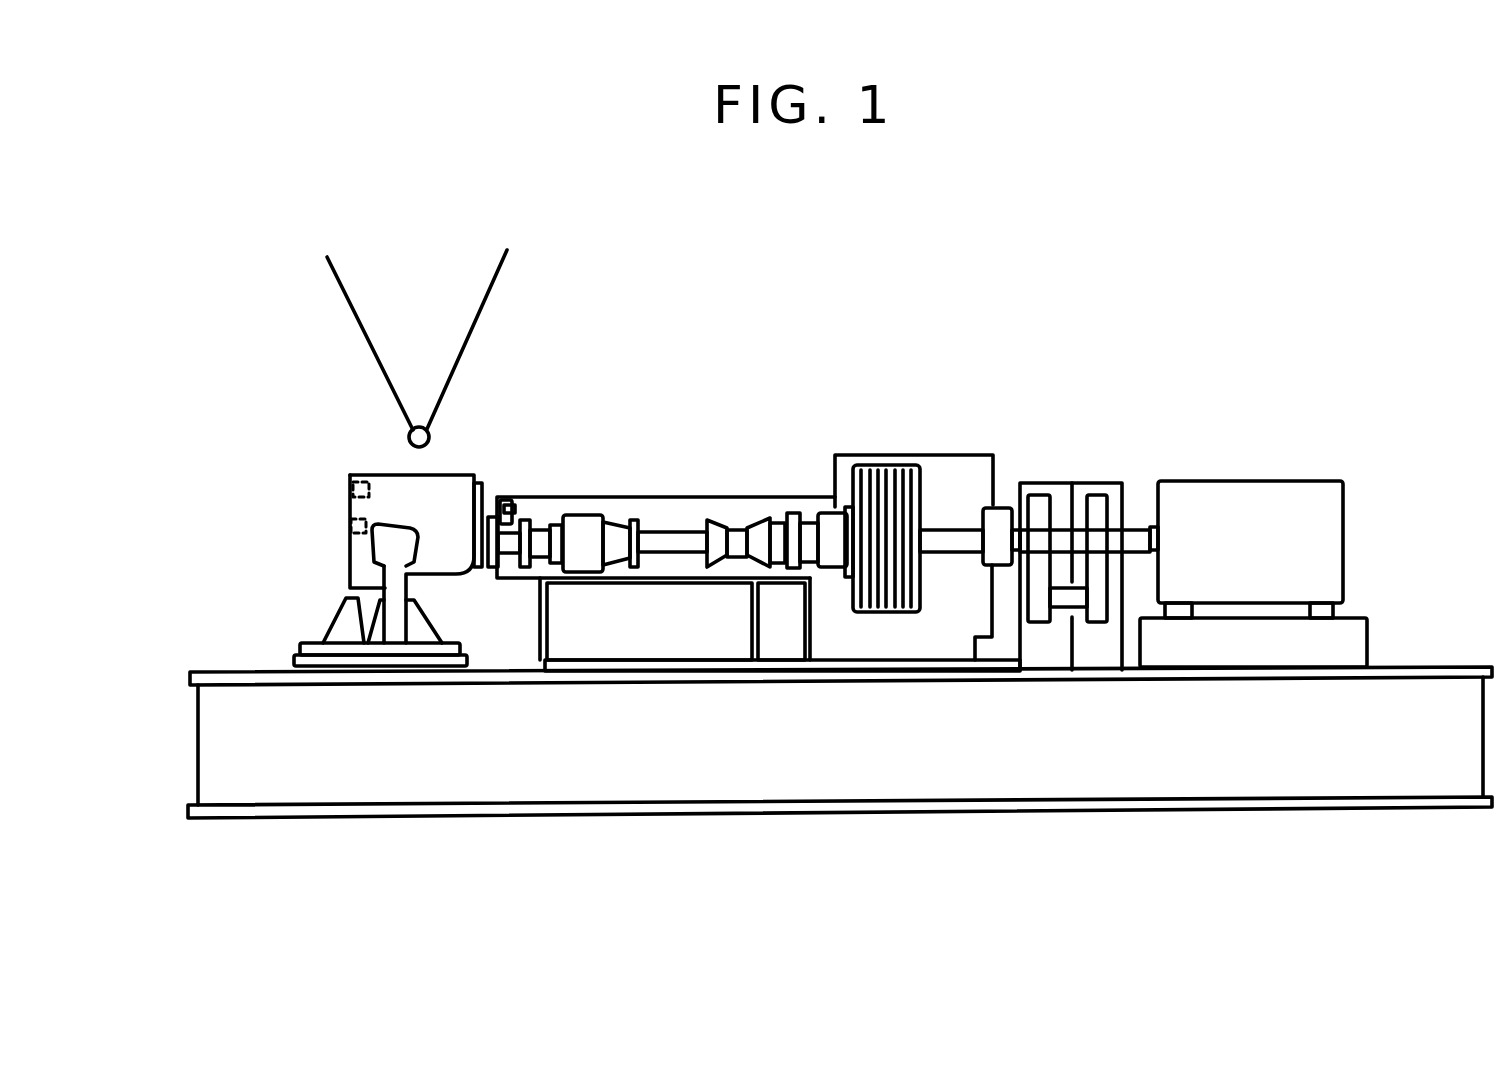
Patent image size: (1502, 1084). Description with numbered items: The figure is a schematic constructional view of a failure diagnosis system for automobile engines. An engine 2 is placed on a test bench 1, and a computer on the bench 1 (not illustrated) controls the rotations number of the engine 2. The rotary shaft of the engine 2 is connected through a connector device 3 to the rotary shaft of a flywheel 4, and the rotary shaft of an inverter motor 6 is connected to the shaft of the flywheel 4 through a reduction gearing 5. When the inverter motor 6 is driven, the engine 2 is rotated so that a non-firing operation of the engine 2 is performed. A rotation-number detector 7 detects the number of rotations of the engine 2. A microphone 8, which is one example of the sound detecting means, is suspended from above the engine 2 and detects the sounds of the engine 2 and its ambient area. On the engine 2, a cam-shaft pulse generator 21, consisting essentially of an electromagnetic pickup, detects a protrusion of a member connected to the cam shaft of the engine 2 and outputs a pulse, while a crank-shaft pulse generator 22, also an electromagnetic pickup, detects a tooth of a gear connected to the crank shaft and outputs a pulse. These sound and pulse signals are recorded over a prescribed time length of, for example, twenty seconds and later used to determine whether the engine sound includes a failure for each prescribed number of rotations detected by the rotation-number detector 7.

The bench 1 is at (1462, 656).
The engine 2 is at (348, 497).
The cam-shaft pulse generator 21 is at (356, 480).
The crank-shaft pulse generator 22 is at (350, 526).
The connector device 3 is at (683, 508).
The flywheel 4 is at (891, 467).
The reduction gearing 5 is at (1073, 483).
The inverter motor 6 is at (1232, 498).
The rotation-number detector 7 is at (523, 497).
The microphone 8 is at (429, 434).